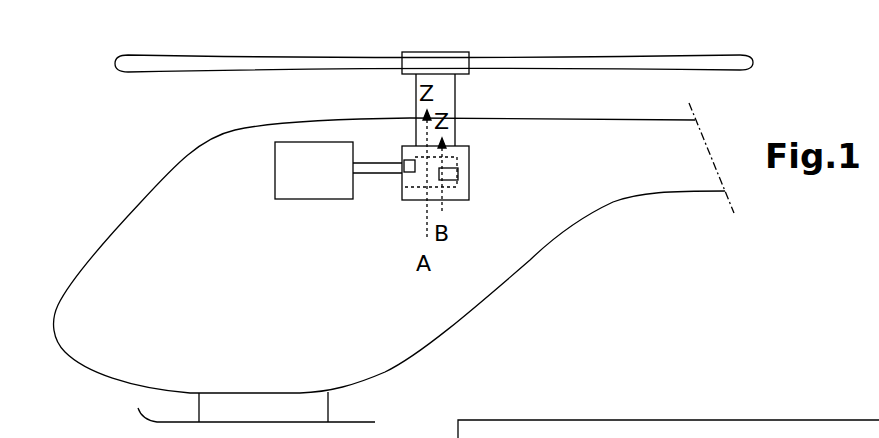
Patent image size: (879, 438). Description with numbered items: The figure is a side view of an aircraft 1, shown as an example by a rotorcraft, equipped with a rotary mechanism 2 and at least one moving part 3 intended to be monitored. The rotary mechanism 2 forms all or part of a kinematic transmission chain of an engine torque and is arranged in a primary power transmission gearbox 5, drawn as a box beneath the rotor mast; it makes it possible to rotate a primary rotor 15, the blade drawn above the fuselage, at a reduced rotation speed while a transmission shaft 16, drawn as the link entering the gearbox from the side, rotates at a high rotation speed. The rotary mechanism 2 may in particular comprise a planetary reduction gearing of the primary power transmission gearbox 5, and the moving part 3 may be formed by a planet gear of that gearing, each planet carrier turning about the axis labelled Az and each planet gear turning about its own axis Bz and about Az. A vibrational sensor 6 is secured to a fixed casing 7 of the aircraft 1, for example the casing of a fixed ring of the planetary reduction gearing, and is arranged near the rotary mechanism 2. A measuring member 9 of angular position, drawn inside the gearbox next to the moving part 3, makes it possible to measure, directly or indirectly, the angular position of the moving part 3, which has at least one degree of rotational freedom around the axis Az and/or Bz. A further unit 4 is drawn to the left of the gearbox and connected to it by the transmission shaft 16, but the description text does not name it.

The aircraft 1 is at (483, 310).
The rotary mechanism 2 is at (465, 182).
The moving part 3 is at (459, 175).
The processing unit 4 is at (280, 178).
The primary power transmission gearbox 5 is at (413, 202).
The vibrational sensor 6 is at (403, 163).
The fixed casing 7 is at (410, 174).
The measuring member 9 is at (452, 190).
The primary rotor 15 is at (513, 54).
The transmission shaft 16 is at (372, 163).